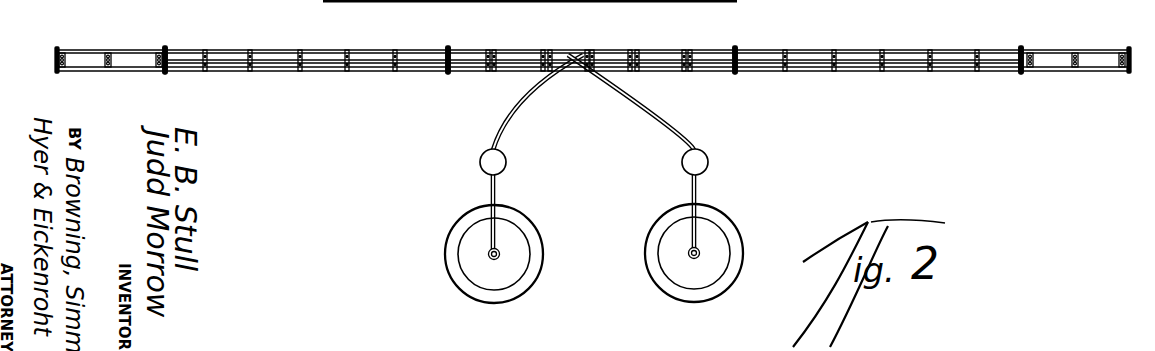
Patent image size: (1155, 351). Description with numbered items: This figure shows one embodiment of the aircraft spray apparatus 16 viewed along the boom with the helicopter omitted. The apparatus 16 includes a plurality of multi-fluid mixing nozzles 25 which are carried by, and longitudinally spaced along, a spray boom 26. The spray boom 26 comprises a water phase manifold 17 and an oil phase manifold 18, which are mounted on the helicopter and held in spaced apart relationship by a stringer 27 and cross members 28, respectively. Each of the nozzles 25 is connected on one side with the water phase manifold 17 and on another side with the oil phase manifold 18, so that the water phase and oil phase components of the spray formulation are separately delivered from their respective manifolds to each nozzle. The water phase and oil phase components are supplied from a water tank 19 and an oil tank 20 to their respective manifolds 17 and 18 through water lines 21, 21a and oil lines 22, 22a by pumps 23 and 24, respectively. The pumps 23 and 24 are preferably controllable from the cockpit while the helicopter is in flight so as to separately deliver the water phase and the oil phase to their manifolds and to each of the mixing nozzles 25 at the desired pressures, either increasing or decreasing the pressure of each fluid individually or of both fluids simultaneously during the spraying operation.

The aircraft spray apparatus 16 is at (476, 129).
The water phase manifold 17 is at (275, 50).
The oil phase manifold 18 is at (364, 72).
The water tank 19 is at (448, 233).
The oil tank 20 is at (742, 228).
The water line 21 is at (531, 88).
The water line 21a is at (490, 192).
The oil line 22 is at (672, 113).
The oil line 22a is at (700, 192).
The pump 23 is at (506, 170).
The pump 24 is at (683, 160).
The multi-fluid mixing nozzles 25 is at (100, 61).
The spray boom 26 is at (318, 73).
The stringer 27 is at (412, 50).
The cross members 28 is at (484, 55).